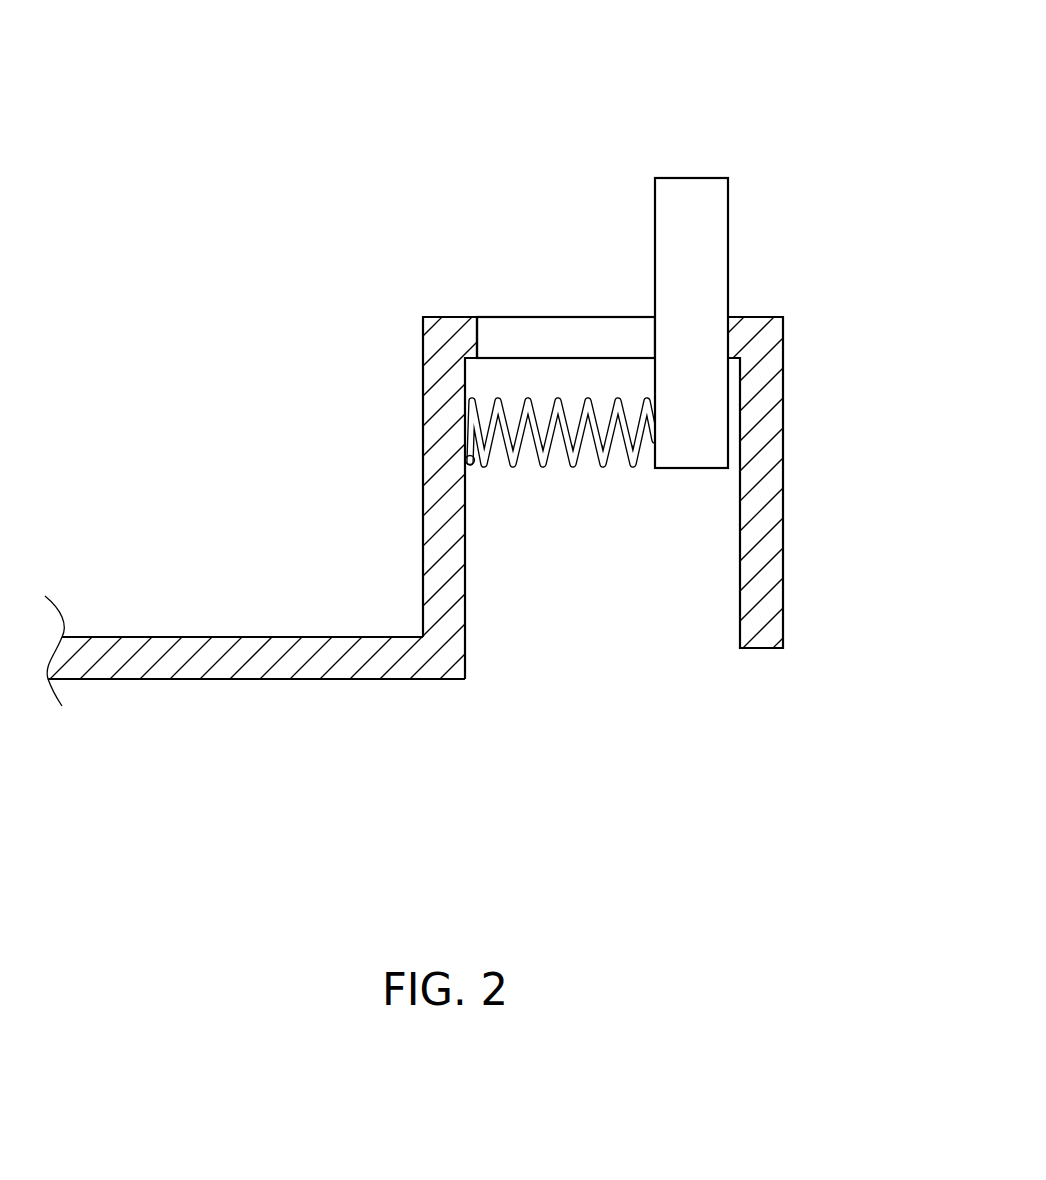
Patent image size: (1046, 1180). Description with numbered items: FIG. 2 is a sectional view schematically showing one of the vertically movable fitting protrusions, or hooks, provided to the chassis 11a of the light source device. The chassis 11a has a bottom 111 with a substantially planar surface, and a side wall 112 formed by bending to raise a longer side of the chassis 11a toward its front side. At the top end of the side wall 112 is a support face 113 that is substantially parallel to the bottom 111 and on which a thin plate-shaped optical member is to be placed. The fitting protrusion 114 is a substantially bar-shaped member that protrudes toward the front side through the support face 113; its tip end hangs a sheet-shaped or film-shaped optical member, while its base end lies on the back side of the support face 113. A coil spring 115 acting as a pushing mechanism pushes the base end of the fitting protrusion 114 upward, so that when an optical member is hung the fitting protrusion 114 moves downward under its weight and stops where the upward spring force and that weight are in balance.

The chassis 11a is at (828, 810).
The bottom 111 is at (197, 637).
The side wall 112 is at (423, 500).
The support face 113 is at (553, 317).
The fitting protrusion (hook) 114 is at (729, 198).
The coil spring 115 is at (573, 470).